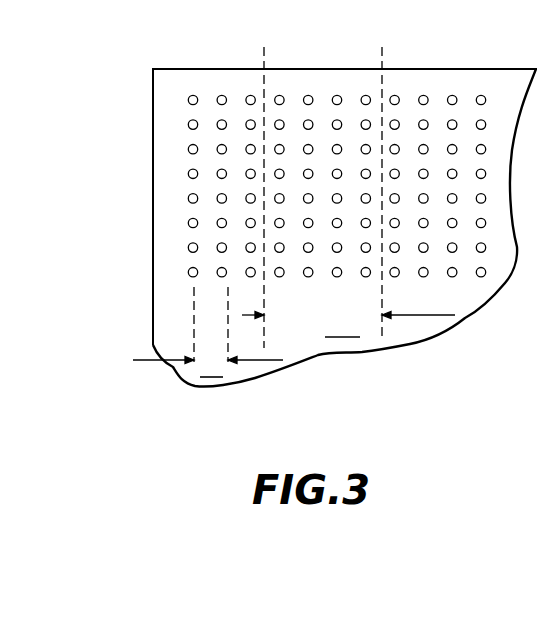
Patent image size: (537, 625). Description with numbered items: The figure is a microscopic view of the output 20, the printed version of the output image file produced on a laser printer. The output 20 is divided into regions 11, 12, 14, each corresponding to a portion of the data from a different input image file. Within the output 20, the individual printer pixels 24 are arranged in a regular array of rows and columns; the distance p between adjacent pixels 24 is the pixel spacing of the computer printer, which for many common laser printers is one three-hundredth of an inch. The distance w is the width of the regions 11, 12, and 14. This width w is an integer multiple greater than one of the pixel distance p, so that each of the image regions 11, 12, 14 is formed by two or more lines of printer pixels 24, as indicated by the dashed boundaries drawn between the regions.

The region 11 is at (215, 69).
The region 12 is at (337, 69).
The region 14 is at (465, 75).
The output 20 is at (153, 128).
The printer pixels 24 is at (190, 177).